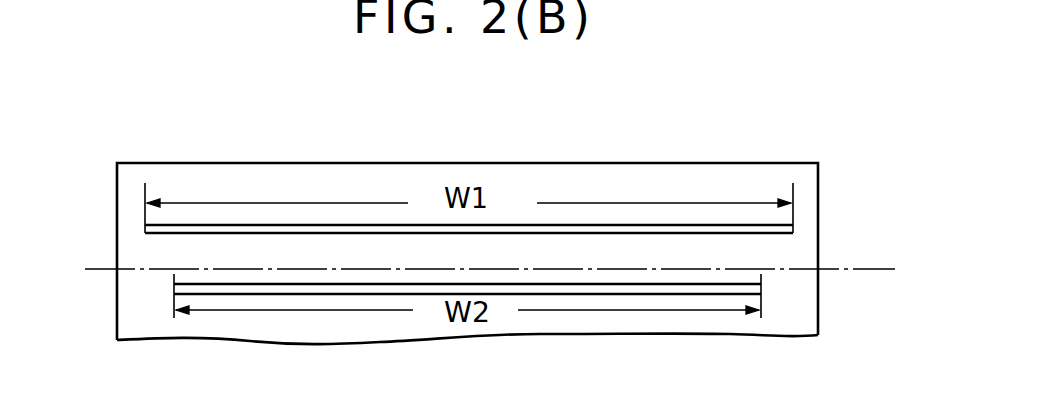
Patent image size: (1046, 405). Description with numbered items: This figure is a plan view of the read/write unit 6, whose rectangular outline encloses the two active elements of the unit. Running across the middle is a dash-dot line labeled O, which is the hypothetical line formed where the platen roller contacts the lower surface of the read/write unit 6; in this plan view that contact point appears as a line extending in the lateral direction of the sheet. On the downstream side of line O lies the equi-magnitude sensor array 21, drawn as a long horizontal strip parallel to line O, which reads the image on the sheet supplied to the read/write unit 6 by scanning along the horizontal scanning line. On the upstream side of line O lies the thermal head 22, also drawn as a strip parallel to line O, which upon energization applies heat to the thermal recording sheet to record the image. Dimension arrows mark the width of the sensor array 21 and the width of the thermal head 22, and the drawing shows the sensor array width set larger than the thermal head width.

The read/write unit 6 is at (806, 164).
The equi-magnitude sensor array 21 is at (793, 226).
The thermal head 22 is at (761, 284).